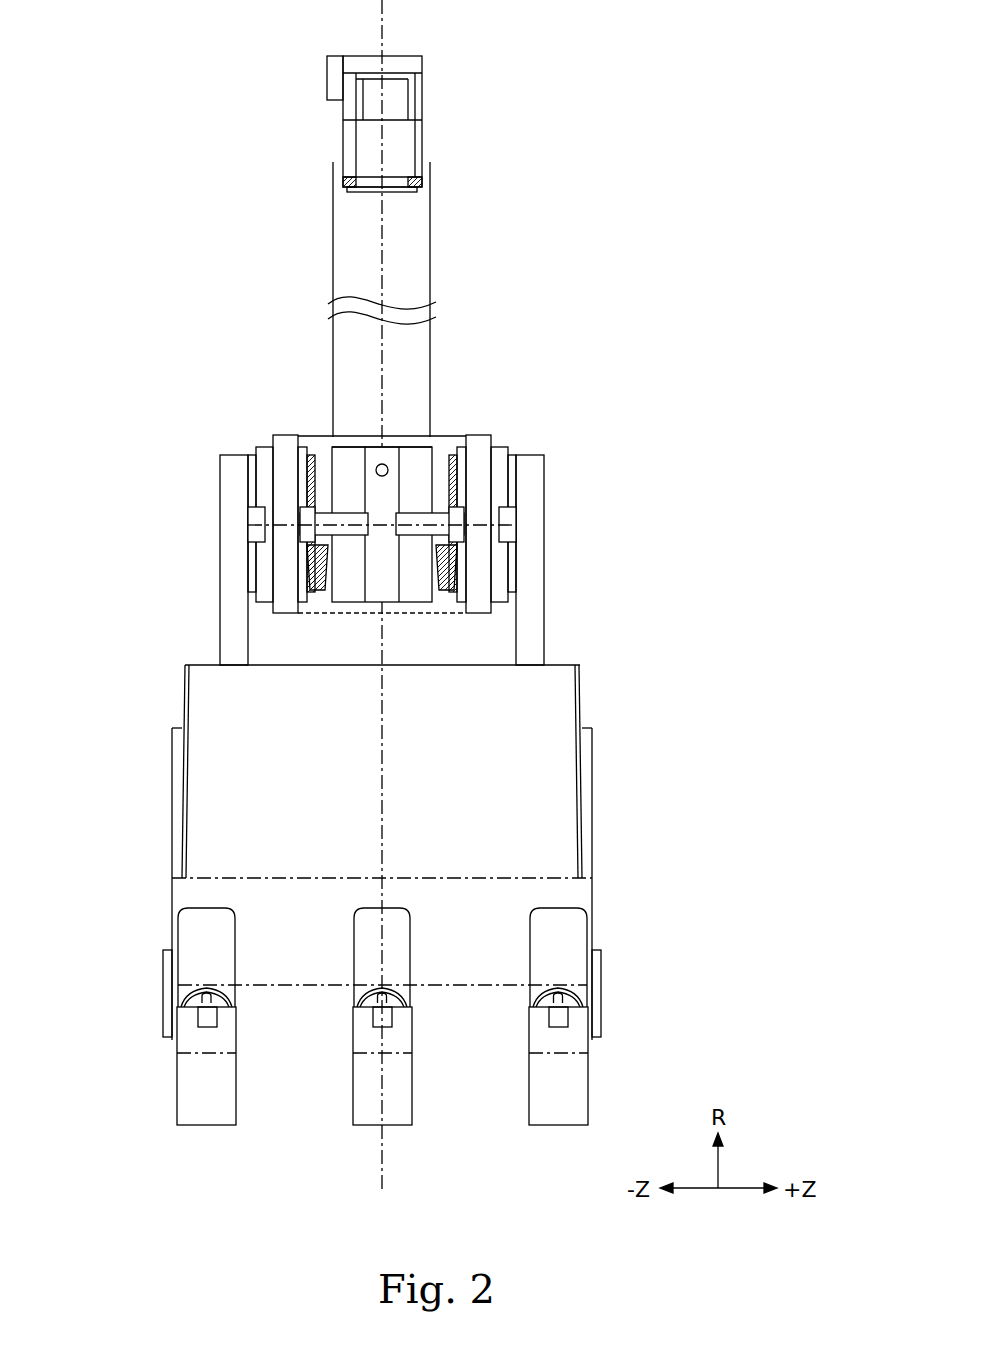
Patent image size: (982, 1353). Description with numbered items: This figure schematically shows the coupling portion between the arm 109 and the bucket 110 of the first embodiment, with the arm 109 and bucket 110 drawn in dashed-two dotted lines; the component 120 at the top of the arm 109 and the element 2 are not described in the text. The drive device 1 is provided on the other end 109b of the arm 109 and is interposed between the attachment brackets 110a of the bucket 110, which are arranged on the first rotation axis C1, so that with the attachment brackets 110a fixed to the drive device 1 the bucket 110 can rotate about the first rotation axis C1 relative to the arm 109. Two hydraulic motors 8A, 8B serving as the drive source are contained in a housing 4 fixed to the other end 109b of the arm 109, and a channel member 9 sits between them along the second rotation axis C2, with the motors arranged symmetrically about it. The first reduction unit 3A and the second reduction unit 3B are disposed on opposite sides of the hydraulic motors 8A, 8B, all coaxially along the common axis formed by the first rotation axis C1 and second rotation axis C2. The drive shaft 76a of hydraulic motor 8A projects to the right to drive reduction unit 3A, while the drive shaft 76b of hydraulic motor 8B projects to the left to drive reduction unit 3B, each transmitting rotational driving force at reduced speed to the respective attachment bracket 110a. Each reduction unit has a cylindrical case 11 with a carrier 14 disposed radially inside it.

The drive device 1 is at (552, 432).
The coupling body 2 is at (440, 440).
The first reduction unit 3A is at (520, 440).
The second reduction unit 3B is at (240, 505).
The housing 4 is at (426, 615).
The first hydraulic motor 8A is at (455, 605).
The second hydraulic motor 8B is at (304, 605).
The channel member 9 is at (378, 447).
The case 11 is at (286, 436).
The carrier 14 is at (250, 565).
The drive shaft 76a is at (422, 513).
The drive shaft 76b is at (340, 513).
The first rotation axis C1 is at (512, 511).
The second rotation axis C2 is at (456, 524).
The arm 109 is at (431, 245).
The other end 109b is at (333, 430).
The bucket 110 is at (172, 852).
The attachment bracket 110a is at (220, 548).
The head unit 120 is at (424, 145).